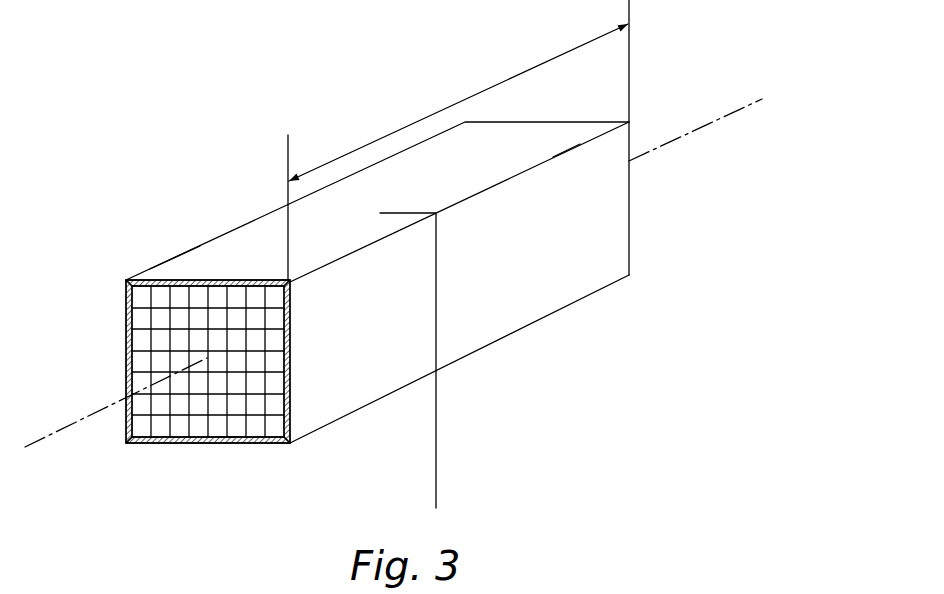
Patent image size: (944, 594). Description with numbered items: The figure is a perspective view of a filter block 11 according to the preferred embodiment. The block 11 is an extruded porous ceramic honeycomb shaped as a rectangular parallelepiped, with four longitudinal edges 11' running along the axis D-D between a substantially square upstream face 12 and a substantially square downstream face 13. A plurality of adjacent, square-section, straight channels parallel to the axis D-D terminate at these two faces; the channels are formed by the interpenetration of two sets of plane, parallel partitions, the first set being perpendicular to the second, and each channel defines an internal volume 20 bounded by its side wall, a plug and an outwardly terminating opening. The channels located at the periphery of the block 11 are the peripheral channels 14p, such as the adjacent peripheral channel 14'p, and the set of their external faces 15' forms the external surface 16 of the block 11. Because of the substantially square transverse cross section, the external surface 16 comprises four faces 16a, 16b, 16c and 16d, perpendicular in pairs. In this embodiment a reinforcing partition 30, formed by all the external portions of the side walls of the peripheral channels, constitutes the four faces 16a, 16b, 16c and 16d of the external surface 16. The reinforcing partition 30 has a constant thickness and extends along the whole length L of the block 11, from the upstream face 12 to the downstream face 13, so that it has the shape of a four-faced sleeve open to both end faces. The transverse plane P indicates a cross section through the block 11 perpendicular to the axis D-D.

The block 11 is at (377, 194).
The longitudinal edge 11' is at (629, 185).
The upstream face 12 is at (127, 385).
The downstream face 13 is at (655, 255).
The peripheral channel 14p is at (252, 298).
The peripheral channel 14'p is at (155, 294).
The external face 15' is at (322, 392).
The external surface 16 is at (473, 299).
The face of the external surface 16a is at (188, 264).
The face of the external surface 16b is at (365, 360).
The face of the external surface 16c is at (158, 443).
The face of the external surface 16d is at (126, 318).
The internal volume 20 is at (140, 357).
The reinforcing partition 30 is at (227, 442).
The transverse plane P is at (408, 360).
The axis D- D is at (382, 263).
The length L is at (458, 102).